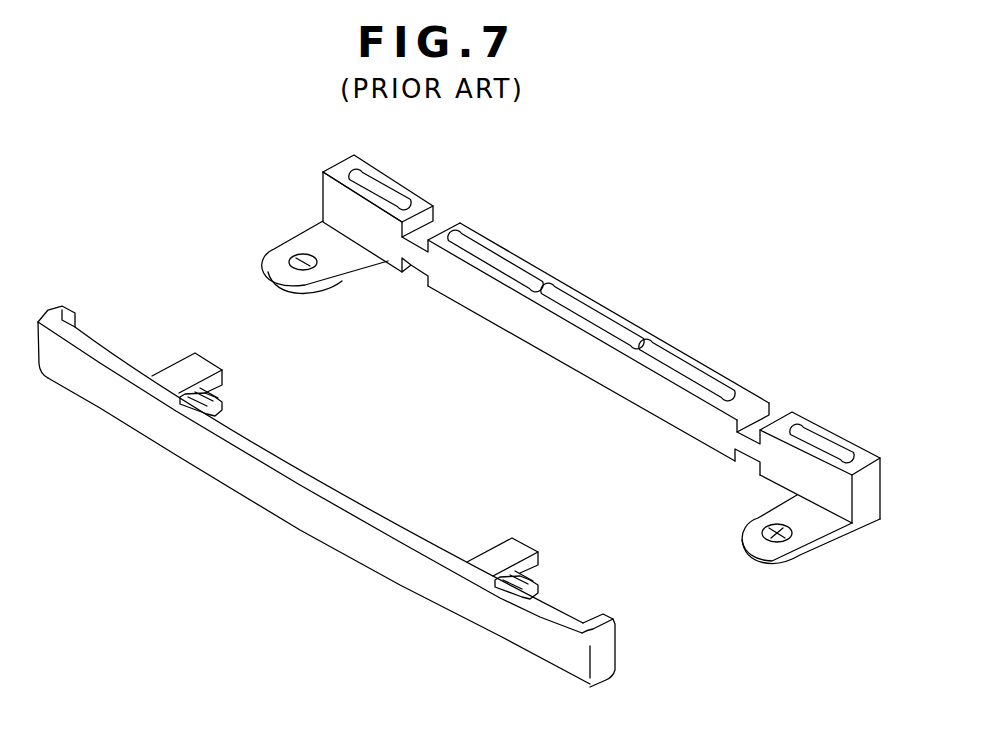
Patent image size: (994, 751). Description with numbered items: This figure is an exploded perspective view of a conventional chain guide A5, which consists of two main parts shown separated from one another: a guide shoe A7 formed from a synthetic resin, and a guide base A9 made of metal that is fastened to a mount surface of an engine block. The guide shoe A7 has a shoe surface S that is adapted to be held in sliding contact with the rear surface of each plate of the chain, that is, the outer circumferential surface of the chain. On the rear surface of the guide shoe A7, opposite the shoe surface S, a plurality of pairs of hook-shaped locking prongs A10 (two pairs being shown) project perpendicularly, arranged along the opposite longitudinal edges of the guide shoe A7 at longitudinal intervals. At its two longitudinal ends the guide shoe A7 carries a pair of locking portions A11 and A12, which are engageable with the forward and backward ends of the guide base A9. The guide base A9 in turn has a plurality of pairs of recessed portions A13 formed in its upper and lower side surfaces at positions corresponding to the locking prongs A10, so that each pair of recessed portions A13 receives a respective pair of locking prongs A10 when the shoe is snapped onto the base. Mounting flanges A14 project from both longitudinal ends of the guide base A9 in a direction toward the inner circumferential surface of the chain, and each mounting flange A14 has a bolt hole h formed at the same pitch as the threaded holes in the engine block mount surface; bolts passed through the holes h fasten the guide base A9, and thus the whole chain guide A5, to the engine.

The chain guide A5 is at (593, 707).
The guide shoe A7 is at (266, 519).
The guide base A9 is at (640, 331).
The hook-shaped locking prongs A10 is at (183, 372).
The locking portion A11 is at (607, 640).
The locking portion A12 is at (58, 308).
The recessed portions A13 is at (434, 229).
The mounting flanges A14 is at (300, 288).
The bolt holes h is at (303, 256).
The shoe surface S is at (337, 530).